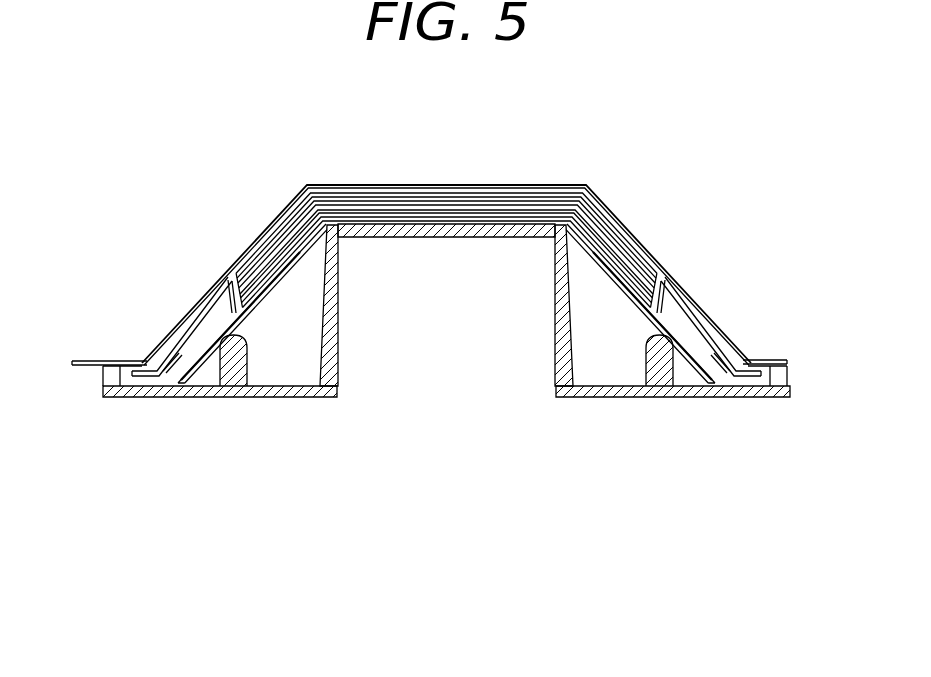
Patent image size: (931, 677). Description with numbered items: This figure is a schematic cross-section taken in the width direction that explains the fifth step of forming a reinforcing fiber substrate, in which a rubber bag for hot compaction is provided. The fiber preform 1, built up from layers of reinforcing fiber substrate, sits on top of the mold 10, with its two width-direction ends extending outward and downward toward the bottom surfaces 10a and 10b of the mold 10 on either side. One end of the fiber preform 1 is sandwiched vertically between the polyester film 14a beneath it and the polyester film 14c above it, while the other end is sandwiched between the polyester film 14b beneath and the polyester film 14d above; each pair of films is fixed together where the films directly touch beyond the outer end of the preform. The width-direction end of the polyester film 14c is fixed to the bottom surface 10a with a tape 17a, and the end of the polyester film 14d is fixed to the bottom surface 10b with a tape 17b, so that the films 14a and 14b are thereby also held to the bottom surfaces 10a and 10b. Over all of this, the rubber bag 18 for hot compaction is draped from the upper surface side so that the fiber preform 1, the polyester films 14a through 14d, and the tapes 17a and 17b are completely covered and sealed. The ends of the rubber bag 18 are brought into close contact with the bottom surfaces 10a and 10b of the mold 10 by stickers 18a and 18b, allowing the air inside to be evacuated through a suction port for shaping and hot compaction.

The fiber preform 1 is at (450, 205).
The rubber bag for hot compaction 18 is at (508, 185).
The sticker 18a is at (110, 375).
The sticker 18b is at (787, 372).
The tape 17a is at (145, 363).
The tape 17b is at (743, 360).
The polyester film 14a is at (265, 292).
The polyester film 14b is at (622, 293).
The polyester film 14c is at (207, 335).
The polyester film 14d is at (673, 327).
The mold 10 is at (450, 418).
The bottom surface 10a is at (288, 383).
The bottom surface 10b is at (602, 383).